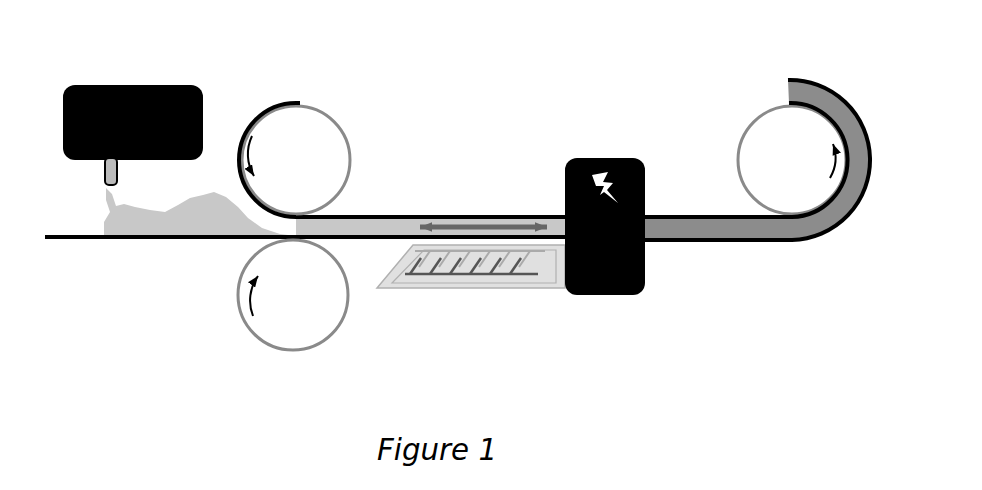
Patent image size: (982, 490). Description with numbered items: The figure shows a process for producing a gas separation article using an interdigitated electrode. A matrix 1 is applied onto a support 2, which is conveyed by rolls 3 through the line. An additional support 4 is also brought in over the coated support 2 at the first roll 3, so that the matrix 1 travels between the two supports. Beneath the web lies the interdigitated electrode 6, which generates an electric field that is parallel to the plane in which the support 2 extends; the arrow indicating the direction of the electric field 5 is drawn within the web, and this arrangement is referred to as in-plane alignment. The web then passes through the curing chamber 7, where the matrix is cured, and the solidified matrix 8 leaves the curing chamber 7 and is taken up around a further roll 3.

The matrix 1 is at (125, 220).
The support 2 is at (92, 242).
The roll 3 is at (542, 228).
The additional support 4 is at (263, 100).
The direction of the electric field 5 is at (461, 221).
The electrode 6 is at (468, 291).
The curing chamber 7 is at (602, 297).
The solidified matrix 8 is at (827, 102).